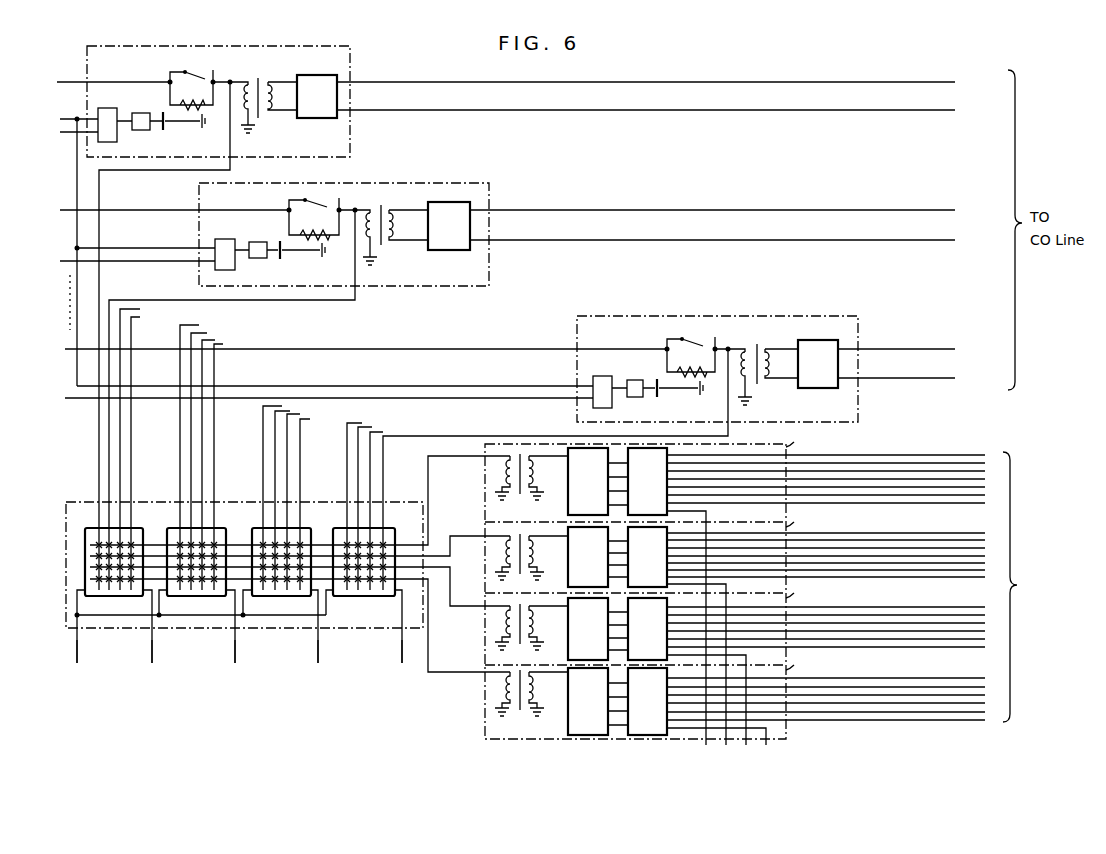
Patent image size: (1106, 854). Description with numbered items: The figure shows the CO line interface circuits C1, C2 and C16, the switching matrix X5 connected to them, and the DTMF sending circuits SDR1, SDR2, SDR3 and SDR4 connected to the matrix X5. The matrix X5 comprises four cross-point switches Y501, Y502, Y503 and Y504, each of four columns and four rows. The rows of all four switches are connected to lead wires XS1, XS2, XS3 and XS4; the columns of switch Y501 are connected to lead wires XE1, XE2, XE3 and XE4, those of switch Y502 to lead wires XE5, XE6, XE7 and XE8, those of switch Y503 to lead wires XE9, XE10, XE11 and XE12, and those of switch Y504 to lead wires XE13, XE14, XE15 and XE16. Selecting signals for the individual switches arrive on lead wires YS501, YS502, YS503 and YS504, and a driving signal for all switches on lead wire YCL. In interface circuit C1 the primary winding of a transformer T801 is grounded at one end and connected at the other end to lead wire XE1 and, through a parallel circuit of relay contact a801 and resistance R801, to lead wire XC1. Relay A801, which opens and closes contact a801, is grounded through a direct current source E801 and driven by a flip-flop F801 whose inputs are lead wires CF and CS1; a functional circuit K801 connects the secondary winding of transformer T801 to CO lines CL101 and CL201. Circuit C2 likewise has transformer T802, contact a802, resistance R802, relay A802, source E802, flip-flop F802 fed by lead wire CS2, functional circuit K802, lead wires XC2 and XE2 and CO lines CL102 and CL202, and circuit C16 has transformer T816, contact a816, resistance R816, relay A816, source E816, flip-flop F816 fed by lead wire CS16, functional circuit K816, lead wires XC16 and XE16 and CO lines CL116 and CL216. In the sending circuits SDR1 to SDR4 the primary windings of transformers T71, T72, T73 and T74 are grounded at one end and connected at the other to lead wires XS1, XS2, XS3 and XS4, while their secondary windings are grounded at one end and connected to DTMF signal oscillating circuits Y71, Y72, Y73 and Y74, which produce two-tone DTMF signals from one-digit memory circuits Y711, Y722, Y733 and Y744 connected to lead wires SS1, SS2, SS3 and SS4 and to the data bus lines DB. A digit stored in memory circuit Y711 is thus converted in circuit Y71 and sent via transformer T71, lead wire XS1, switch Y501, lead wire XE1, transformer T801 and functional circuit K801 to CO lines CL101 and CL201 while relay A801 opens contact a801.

The CO line interface circuit C1 is at (218, 101).
The CO line interface circuit C2 is at (344, 234).
The CO line interface circuit C16 is at (717, 369).
The lead wire XC1 is at (97, 82).
The lead wire XC2 is at (157, 210).
The lead wire XC16 is at (346, 349).
The lead wire CF is at (63, 119).
The lead wire CS1 is at (61, 132).
The lead wire CS2 is at (120, 261).
The lead wire CS16 is at (309, 398).
The flip-flop F801 is at (108, 117).
The flip-flop F802 is at (225, 246).
The flip-flop F816 is at (604, 384).
The relay A801 is at (141, 133).
The relay A802 is at (259, 262).
The relay A816 is at (636, 400).
The direct current source E801 is at (184, 128).
The direct current source E802 is at (302, 257).
The direct current source E816 is at (680, 395).
The resistance R801 is at (191, 96).
The resistance R802 is at (314, 225).
The resistance R816 is at (691, 363).
The relay contact a801 is at (196, 68).
The relay contact a802 is at (317, 196).
The relay contact a816 is at (694, 335).
The transformer T801 is at (269, 96).
The transformer T802 is at (395, 226).
The transformer T816 is at (768, 365).
The functional circuit K801 is at (317, 96).
The functional circuit K802 is at (449, 226).
The functional circuit K816 is at (818, 364).
The CO line CL101 is at (669, 82).
The CO line CL201 is at (669, 110).
The CO line CL102 is at (736, 210).
The CO line CL202 is at (736, 240).
The CO line CL116 is at (920, 349).
The CO line CL216 is at (920, 378).
The lead wire XE1 is at (94, 435).
The lead wire XE2 is at (94, 453).
The lead wire XE3 is at (120, 470).
The lead wire XE4 is at (131, 488).
The lead wire XE5 is at (180, 421).
The lead wire XE6 is at (191, 435).
The lead wire XE7 is at (202, 453).
The lead wire XE8 is at (214, 470).
The lead wire XE9 is at (263, 435).
The lead wire XE10 is at (275, 453).
The lead wire XE11 is at (287, 470).
The lead wire XE12 is at (300, 488).
The lead wire XE13 is at (347, 435).
The lead wire XE14 is at (358, 453).
The lead wire XE15 is at (370, 470).
The lead wire XE16 is at (345, 488).
The switching matrix X5 is at (244, 565).
The cross-point switch Y501 is at (123, 586).
The cross-point switch Y502 is at (206, 586).
The cross-point switch Y503 is at (290, 586).
The cross-point switch Y504 is at (373, 586).
The lead wire YCL is at (77, 666).
The lead wire YS501 is at (156, 666).
The lead wire YS502 is at (241, 666).
The lead wire YS503 is at (324, 666).
The lead wire YS504 is at (406, 666).
The lead wire XS1 is at (300, 500).
The lead wire XS2 is at (300, 546).
The lead wire XS3 is at (300, 587).
The lead wire XS4 is at (300, 626).
The transformer T71 is at (531, 483).
The transformer T72 is at (531, 562).
The transformer T73 is at (531, 633).
The transformer T74 is at (531, 701).
The DTMF signal oscillating circuit Y71 is at (588, 481).
The DTMF signal oscillating circuit Y72 is at (588, 557).
The DTMF signal oscillating circuit Y73 is at (588, 629).
The DTMF signal oscillating circuit Y74 is at (588, 701).
The one-digit memory circuit Y711 is at (647, 481).
The one-digit memory circuit Y722 is at (647, 557).
The one-digit memory circuit Y733 is at (647, 629).
The one-digit memory circuit Y744 is at (647, 701).
The DTMF sending circuit SDR1 is at (812, 443).
The DTMF sending circuit SDR2 is at (812, 523).
The DTMF sending circuit SDR3 is at (812, 594).
The DTMF sending circuit SDR4 is at (812, 666).
The lead wire SS1 is at (691, 645).
The lead wire SS2 is at (701, 682).
The lead wire SS3 is at (711, 717).
The lead wire SS4 is at (721, 754).
The data bus lines DB is at (1022, 587).